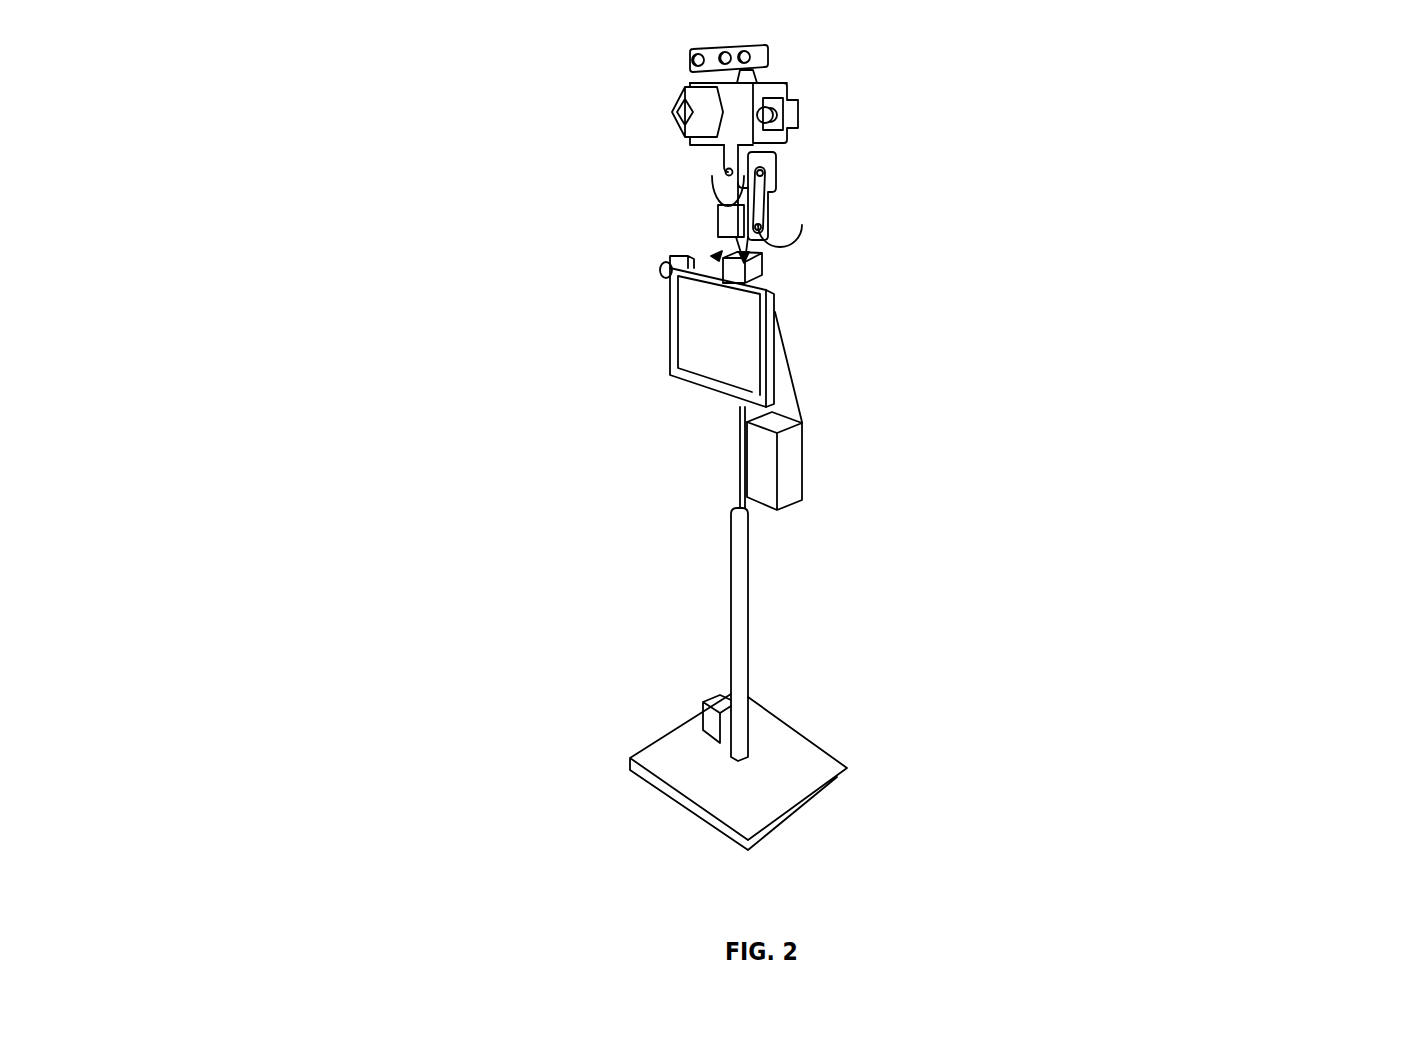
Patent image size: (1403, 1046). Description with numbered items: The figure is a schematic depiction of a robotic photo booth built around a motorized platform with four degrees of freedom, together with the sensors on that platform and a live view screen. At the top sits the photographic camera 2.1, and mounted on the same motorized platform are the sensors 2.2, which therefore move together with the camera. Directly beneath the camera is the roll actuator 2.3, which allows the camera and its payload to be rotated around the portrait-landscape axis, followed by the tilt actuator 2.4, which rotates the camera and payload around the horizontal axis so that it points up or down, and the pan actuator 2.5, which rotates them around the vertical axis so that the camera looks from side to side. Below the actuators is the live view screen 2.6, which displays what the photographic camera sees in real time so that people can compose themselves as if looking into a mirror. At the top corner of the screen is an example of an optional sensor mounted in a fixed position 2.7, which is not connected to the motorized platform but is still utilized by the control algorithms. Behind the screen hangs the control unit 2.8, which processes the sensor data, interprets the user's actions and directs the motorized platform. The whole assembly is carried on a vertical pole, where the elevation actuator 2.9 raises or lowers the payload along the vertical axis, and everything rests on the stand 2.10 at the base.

The photographic camera 2.1 is at (672, 112).
The sensors mounted on the motorized platform 2.2 is at (783, 115).
The roll actuator 2.3 is at (712, 182).
The tilt actuator 2.4 is at (722, 237).
The pan actuator 2.5 is at (762, 263).
The live view screen 2.6 is at (748, 348).
The sensor mounted in a fixed position 2.7 is at (664, 276).
The control unit 2.8 is at (803, 469).
The elevation actuator 2.9 is at (703, 713).
The stand 2.10 is at (840, 770).